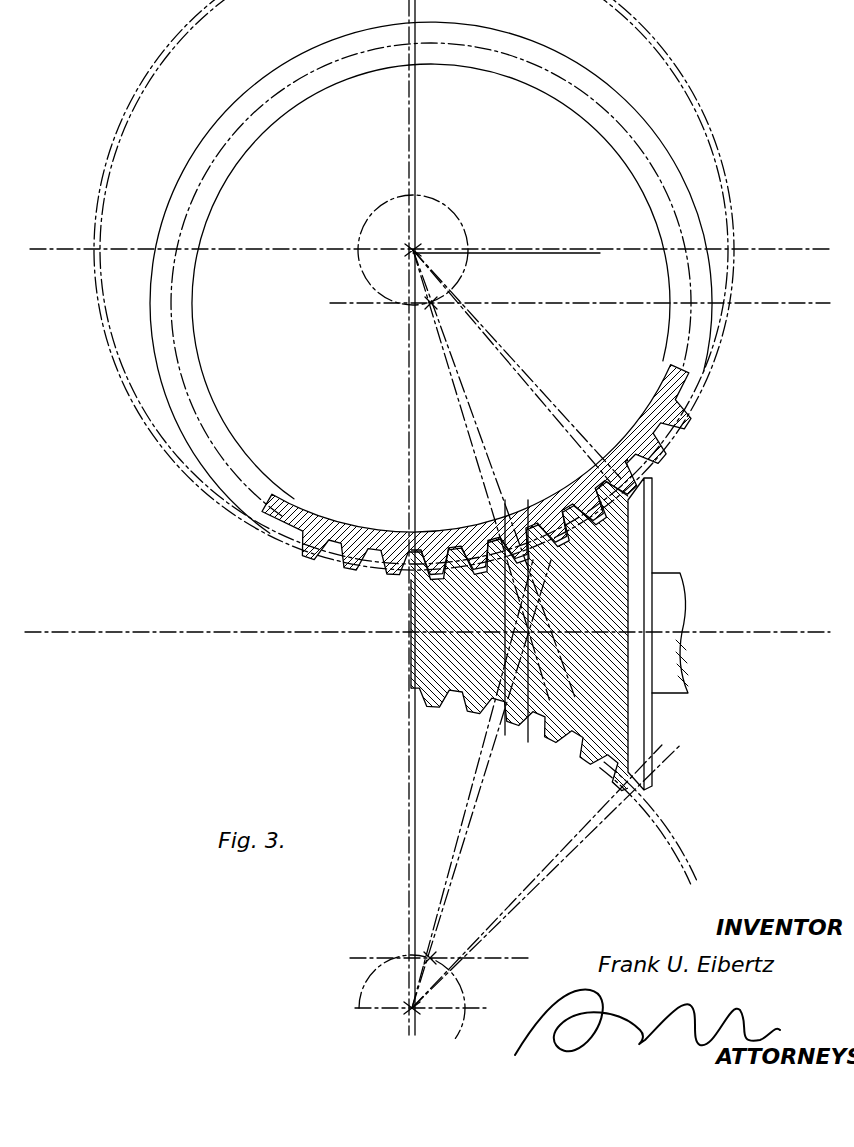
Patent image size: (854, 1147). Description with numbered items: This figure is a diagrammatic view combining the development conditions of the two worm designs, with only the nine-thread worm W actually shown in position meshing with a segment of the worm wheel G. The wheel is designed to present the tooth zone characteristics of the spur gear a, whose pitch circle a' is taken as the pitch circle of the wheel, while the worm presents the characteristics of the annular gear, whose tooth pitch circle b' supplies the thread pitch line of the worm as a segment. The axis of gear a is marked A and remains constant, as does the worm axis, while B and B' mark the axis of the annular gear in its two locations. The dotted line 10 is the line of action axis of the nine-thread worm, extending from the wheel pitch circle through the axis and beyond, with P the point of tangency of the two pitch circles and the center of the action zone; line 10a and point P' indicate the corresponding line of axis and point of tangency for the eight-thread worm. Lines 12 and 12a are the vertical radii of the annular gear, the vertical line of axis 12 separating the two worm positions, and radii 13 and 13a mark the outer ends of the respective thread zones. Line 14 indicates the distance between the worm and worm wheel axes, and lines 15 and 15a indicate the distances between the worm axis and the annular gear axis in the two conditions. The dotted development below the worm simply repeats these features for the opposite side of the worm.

The line of action axis 10 is at (494, 450).
The line of action axis 10a is at (458, 822).
The vertical radius of gear b 12 is at (408, 445).
The vertical radius of gear b 12a is at (417, 442).
The radius of the outer end of the thread zone 13 is at (548, 409).
The radius of the outer end of the thread zone 13a is at (558, 395).
The distance indicating line 14 is at (588, 306).
The distance indicating line 15 is at (542, 254).
The distance indicating line 15a is at (511, 249).
The worm wheel segment G is at (331, 527).
The worm W is at (410, 657).
The point of tangency P is at (522, 608).
The point of tangency P' is at (476, 617).
The axis of gear a A is at (431, 304).
The axis of gear b B is at (388, 630).
The axis of gear b B' is at (440, 622).
The spur gear a is at (431, 281).
The pitch circle of spur gear a a' is at (431, 277).
The pitch circle of annular gear b b' is at (414, 442).